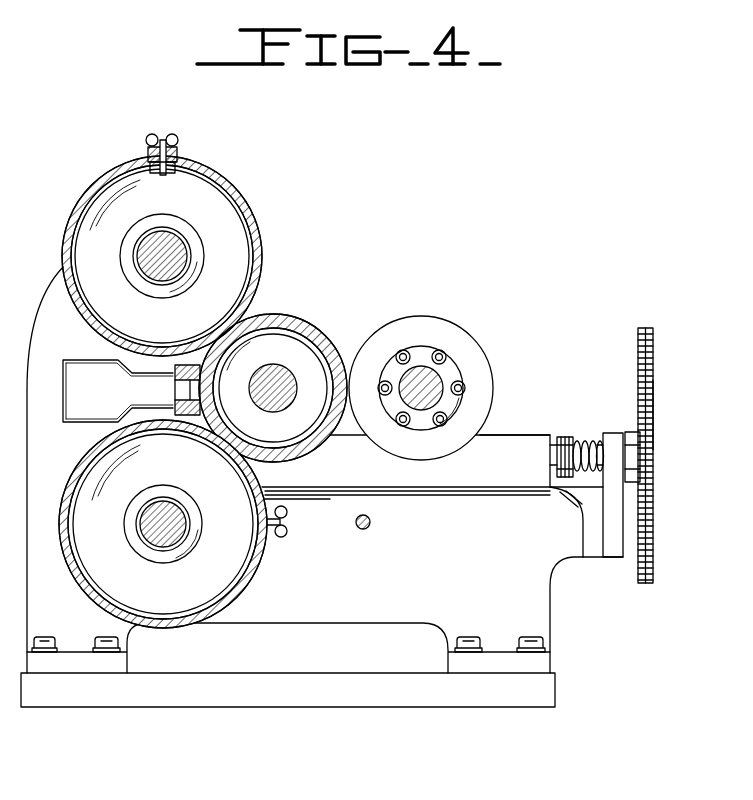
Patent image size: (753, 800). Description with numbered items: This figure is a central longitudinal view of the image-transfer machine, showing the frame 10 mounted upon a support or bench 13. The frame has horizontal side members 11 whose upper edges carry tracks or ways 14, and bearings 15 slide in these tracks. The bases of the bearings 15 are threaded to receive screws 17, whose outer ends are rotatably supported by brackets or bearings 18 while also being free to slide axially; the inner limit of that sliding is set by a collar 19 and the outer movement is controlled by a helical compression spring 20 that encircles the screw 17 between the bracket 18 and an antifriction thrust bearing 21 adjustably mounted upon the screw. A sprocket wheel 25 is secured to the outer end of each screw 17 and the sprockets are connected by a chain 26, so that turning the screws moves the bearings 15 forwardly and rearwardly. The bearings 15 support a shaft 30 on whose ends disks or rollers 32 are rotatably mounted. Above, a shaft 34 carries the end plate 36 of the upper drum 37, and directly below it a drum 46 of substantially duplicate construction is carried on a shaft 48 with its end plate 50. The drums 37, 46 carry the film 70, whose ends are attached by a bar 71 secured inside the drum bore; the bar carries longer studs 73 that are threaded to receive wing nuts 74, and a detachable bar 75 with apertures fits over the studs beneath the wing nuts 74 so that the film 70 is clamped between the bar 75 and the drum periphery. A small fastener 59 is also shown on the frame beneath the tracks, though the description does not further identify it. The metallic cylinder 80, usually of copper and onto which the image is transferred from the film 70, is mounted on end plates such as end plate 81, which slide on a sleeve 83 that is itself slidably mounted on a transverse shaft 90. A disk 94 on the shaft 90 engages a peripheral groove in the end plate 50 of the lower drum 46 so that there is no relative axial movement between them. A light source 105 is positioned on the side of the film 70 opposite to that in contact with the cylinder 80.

The frame 10 is at (560, 621).
The horizontal side members 11 is at (356, 613).
The support or bench 13 is at (298, 700).
The tracks or ways 14 is at (486, 482).
The bearings 15 is at (490, 435).
The screws 17 is at (552, 455).
The brackets or bearings 18 is at (613, 436).
The collar 19 is at (633, 432).
The helical compression spring 20 is at (585, 440).
The antifriction thrust bearing 21 is at (561, 435).
The sprocket wheel 25 is at (653, 413).
The chain 26 is at (653, 340).
The shaft 30 is at (445, 388).
The disks or rollers 32 is at (463, 338).
The shaft 34 is at (183, 251).
The end plate 36 is at (62, 240).
The drum 37 is at (86, 302).
The drum 46 is at (152, 565).
The shaft 48 is at (175, 500).
The end plate 50 is at (80, 570).
The bolt 59 is at (371, 522).
The film 70 is at (242, 203).
The bar 71 is at (174, 173).
The studs 73 is at (158, 174).
The wing nuts 74 is at (146, 143).
The detachable bar 75 is at (180, 151).
The metallic cylinder 80 is at (311, 333).
The end plate 81 is at (281, 345).
The sleeve 83 is at (266, 403).
The shaft 90 is at (291, 389).
The disk 94 is at (258, 318).
The light source 105 is at (131, 391).